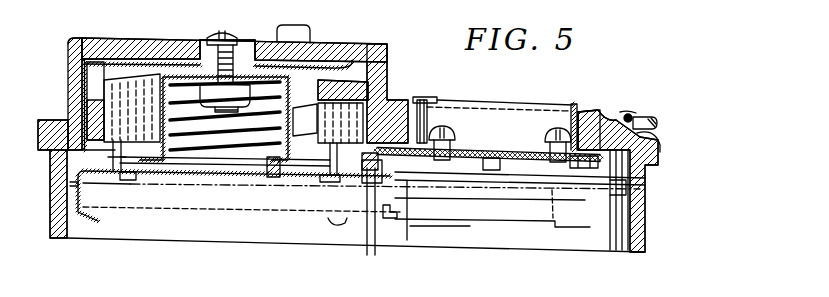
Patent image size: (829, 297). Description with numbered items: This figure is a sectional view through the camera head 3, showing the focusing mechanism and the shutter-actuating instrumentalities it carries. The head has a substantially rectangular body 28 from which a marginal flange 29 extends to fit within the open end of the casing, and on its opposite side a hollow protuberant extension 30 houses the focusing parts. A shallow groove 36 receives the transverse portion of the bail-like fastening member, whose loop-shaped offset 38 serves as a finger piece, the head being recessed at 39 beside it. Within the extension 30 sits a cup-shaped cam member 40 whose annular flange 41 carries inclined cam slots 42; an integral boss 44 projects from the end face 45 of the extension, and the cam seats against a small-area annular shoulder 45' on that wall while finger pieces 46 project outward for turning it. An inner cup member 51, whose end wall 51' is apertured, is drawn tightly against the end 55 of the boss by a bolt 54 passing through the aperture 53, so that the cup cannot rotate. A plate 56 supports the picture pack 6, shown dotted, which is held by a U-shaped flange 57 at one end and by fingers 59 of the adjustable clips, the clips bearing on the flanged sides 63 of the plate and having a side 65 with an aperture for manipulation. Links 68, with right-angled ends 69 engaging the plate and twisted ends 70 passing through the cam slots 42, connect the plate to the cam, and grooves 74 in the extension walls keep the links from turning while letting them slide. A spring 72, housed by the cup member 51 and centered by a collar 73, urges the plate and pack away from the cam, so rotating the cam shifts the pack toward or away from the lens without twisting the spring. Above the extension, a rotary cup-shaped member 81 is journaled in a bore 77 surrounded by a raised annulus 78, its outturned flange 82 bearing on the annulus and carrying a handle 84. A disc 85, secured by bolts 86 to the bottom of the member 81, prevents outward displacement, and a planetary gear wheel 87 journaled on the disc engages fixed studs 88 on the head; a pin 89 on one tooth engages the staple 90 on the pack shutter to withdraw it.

The head 3 is at (645, 207).
The picture pack 6 is at (113, 203).
The body 28 is at (38, 139).
The marginal flange 29 is at (50, 196).
The protuberant extension 30 is at (68, 70).
The groove 36 is at (636, 112).
The loop-shaped offset 38 is at (652, 122).
The recess 39 is at (655, 143).
The cam member 40 is at (80, 62).
The annular flange 41 is at (87, 89).
The cam slots 42 is at (388, 101).
The boss 44 is at (266, 52).
The end face 45 is at (221, 45).
The annular shoulder 45' is at (249, 42).
The finger pieces 46 is at (297, 33).
The cup member 51 is at (295, 118).
The end wall 51' is at (214, 90).
The aperture 53 is at (240, 50).
The bolt 54 is at (236, 37).
The end of boss 55 is at (208, 44).
The plate 56 is at (165, 177).
The U-shaped flange 57 is at (86, 216).
The fingers 59 is at (347, 224).
The flange 63 is at (622, 195).
The side of clip 65 is at (472, 224).
The links 68 is at (113, 157).
The link ends 69 is at (124, 178).
The link ends 70 is at (122, 94).
The spring 72 is at (243, 178).
The spring-centering collar 73 is at (204, 176).
The grooves 74 is at (100, 90).
The bore 77 is at (629, 114).
The raised annulus 78 is at (604, 112).
The rotary cup-shaped member 81 is at (573, 118).
The annular flange 82 is at (587, 108).
The handle 84 is at (451, 98).
The disc 85 is at (489, 148).
The bolts 86 is at (445, 134).
The planetary gear wheel 87 is at (495, 168).
The studs 88 is at (574, 168).
The pin 89 is at (373, 256).
The staple 90 is at (392, 219).